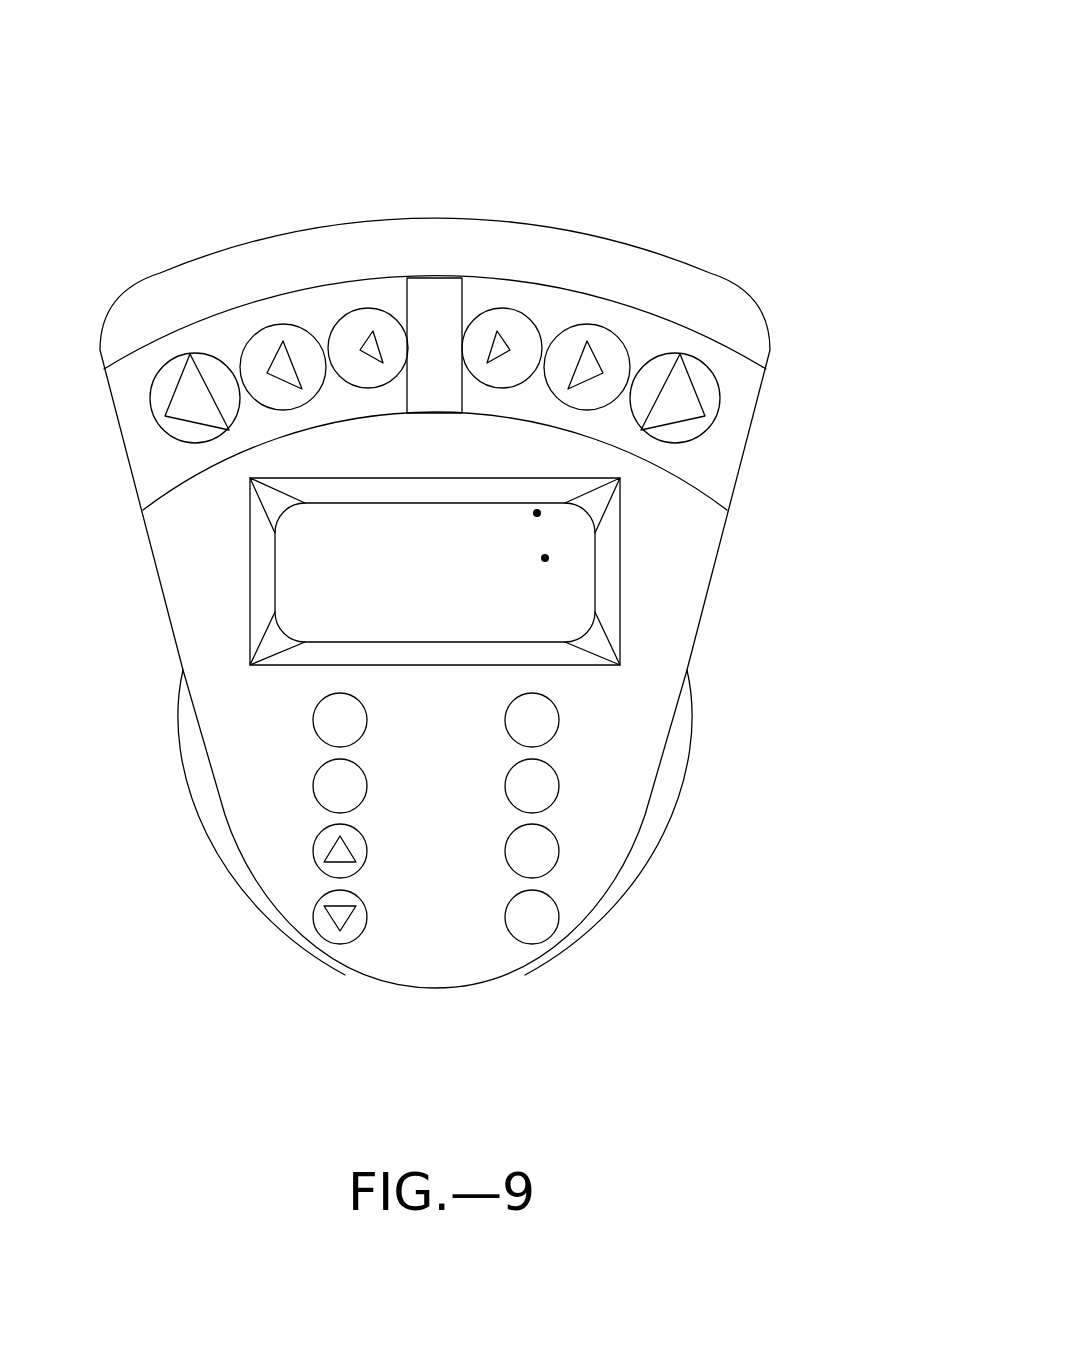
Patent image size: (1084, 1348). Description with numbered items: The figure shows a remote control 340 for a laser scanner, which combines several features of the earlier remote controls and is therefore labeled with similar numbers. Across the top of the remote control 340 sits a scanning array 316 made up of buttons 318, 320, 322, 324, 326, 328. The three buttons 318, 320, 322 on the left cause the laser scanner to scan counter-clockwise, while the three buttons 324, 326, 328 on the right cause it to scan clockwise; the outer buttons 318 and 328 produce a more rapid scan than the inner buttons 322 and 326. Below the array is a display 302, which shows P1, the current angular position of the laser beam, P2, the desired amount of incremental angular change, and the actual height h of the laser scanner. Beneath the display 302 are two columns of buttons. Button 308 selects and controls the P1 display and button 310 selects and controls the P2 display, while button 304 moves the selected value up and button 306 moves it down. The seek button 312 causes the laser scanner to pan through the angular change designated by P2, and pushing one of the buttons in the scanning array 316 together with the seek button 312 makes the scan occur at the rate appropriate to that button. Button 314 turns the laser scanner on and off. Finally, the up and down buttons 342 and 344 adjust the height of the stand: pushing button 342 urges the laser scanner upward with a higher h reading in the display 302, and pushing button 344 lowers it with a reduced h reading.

The LED display 302 is at (657, 565).
The up button 304 is at (313, 720).
The down button 306 is at (559, 721).
The P1 button 308 is at (313, 797).
The P2 button 310 is at (557, 800).
The seek button 312 is at (550, 870).
The on/off button 314 is at (543, 945).
The scanning array 316 is at (773, 385).
The counter-clockwise rapid scan button 318 is at (194, 353).
The counter-clockwise scan button 320 is at (281, 325).
The counter-clockwise slow scan button 322 is at (373, 308).
The clockwise scan button 324 is at (497, 308).
The clockwise slow scan button 326 is at (589, 325).
The clockwise rapid scan button 328 is at (680, 354).
The remote control 340 is at (820, 244).
The up button 342 is at (314, 863).
The down button 344 is at (318, 935).